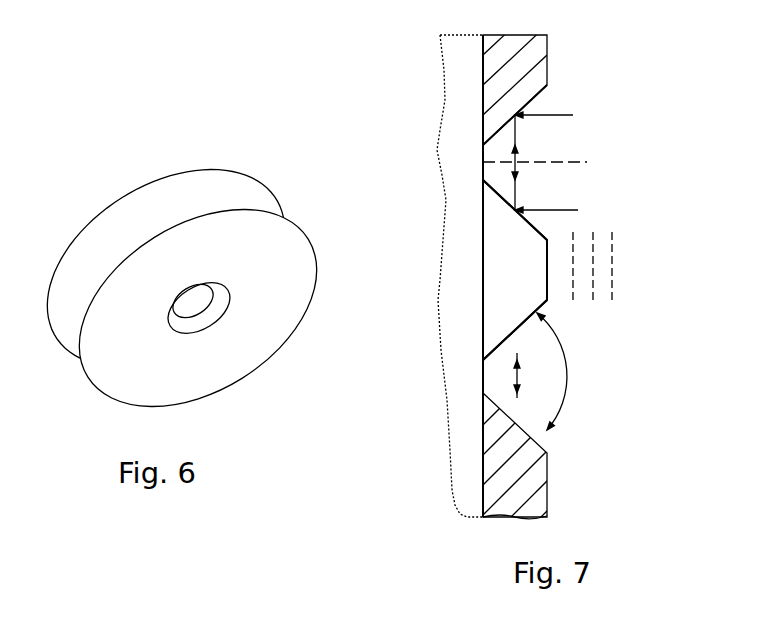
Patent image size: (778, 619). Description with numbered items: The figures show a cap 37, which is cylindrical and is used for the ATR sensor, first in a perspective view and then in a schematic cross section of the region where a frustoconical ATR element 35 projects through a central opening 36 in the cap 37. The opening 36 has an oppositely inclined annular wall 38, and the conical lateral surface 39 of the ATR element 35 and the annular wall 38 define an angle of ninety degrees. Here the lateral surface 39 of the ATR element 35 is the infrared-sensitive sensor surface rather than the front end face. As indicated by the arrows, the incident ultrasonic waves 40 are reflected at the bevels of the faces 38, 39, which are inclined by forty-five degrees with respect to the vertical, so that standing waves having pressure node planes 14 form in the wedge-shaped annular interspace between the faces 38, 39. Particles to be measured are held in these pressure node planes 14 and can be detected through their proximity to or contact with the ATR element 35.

In FIG. 7, the pressure node planes 14 is at (557, 162).
In FIG. 7, the frustoconical ATR element 35 is at (517, 277).
In FIG. 6, the central opening 36 is at (170, 327).
In FIG. 7, the central opening 36 is at (483, 375).
In FIG. 6, the cap 37 is at (133, 220).
In FIG. 7, the cap 37 is at (513, 82).
In FIG. 7, the annular wall 38 is at (498, 122).
In FIG. 7, the conical lateral surface 39 is at (515, 197).
In FIG. 7, the incident ultrasonic waves 40 is at (573, 115).